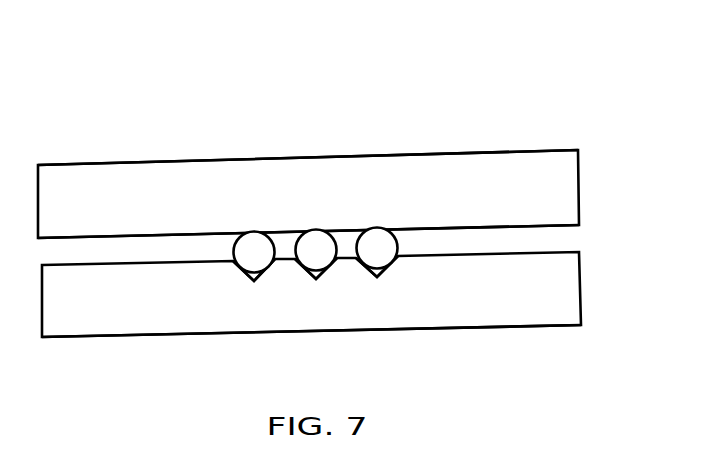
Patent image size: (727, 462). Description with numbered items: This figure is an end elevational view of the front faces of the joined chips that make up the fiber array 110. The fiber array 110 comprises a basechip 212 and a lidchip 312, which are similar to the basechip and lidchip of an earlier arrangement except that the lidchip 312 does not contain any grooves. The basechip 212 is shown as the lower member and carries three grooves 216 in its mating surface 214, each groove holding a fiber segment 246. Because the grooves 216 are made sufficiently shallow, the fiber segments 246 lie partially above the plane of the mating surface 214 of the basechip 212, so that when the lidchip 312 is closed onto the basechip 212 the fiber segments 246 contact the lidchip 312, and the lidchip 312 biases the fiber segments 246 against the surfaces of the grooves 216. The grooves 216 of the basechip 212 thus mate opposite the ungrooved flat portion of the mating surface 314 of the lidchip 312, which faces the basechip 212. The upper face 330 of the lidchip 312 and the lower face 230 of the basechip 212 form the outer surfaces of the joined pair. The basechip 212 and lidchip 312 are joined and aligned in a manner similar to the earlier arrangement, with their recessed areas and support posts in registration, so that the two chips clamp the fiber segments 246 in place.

The fiber array 110 is at (404, 79).
The lidchip 312 is at (116, 214).
The basechip 212 is at (116, 316).
The top surface of upper plate 330 is at (452, 162).
The mating surface of the lidchip 314 is at (548, 253).
The fiber segments 246 is at (252, 242).
The grooves 216 is at (268, 279).
The bottom surface of lower plate 230 is at (160, 318).
The mating surface of the basechip 214 is at (483, 226).